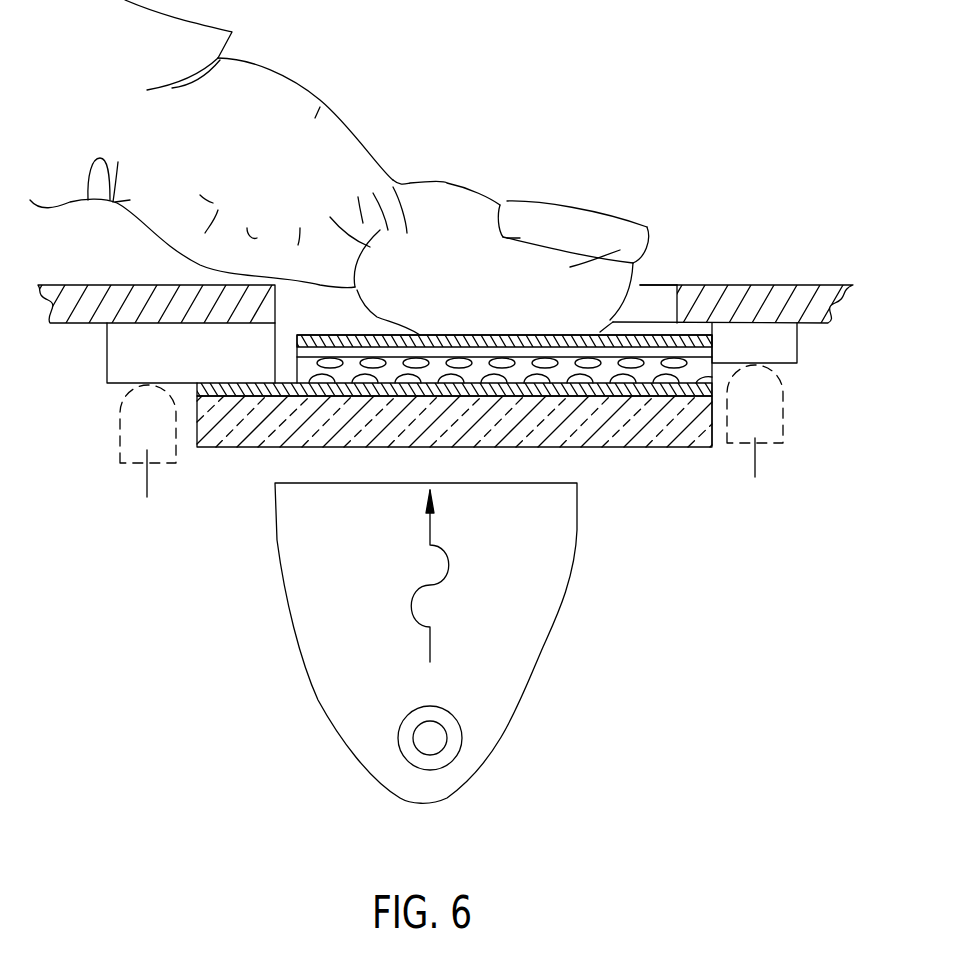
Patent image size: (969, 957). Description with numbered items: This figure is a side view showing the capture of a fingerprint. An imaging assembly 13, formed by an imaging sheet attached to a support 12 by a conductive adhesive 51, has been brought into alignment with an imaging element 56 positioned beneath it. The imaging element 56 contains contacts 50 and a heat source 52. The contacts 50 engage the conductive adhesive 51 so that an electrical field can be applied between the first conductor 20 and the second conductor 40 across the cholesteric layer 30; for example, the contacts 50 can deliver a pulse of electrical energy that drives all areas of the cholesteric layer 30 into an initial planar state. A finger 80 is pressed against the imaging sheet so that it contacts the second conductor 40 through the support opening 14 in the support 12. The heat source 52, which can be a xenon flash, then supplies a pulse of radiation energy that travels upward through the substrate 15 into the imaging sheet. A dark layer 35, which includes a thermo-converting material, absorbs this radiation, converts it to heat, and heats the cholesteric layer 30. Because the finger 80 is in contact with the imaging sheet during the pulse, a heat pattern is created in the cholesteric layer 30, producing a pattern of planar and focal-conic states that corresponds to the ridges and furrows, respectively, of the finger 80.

The support 12 is at (820, 284).
The imaging assembly 13 is at (803, 208).
The support opening 14 is at (642, 302).
The substrate 15 is at (612, 447).
The first conductor 20 is at (692, 383).
The cholesteric layer 30 is at (648, 373).
The dark layer 35 is at (652, 357).
The second conductor 40 is at (702, 345).
The contacts 50 is at (137, 457).
The conductive adhesive 51 is at (118, 372).
The heat source 52 is at (438, 713).
The imaging element 56 is at (210, 475).
The finger 80 is at (313, 117).